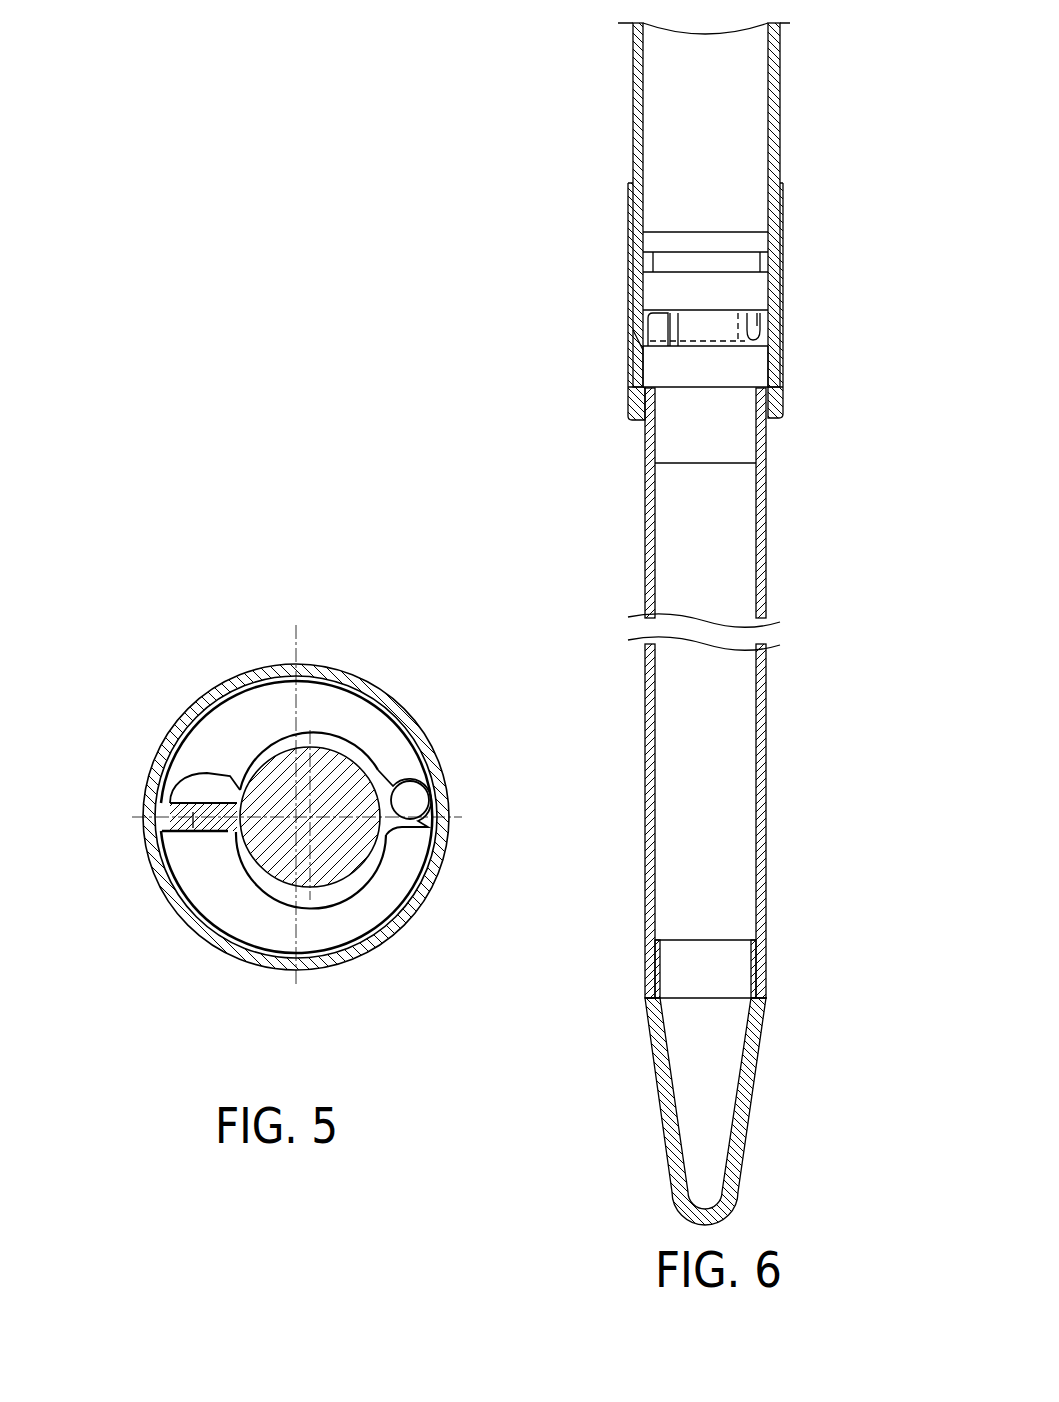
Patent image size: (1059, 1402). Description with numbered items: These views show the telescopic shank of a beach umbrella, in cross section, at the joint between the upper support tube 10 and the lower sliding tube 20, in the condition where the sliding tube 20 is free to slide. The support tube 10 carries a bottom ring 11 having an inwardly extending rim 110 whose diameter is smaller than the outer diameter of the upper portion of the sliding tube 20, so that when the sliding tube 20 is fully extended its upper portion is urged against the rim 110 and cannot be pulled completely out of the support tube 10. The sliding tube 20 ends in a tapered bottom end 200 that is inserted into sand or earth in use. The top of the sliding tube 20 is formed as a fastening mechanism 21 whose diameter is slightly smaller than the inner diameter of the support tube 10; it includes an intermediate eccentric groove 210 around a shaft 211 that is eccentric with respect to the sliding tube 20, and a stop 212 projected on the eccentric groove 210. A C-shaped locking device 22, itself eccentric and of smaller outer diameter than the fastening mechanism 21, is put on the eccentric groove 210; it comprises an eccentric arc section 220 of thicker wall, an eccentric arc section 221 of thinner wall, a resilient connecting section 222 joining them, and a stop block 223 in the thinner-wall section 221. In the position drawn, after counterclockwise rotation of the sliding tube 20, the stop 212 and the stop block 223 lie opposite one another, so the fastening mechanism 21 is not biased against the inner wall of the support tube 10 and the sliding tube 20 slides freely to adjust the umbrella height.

In FIG. 6, the support tube 10 is at (778, 100).
In FIG. 5, the support tube 10 is at (323, 670).
In FIG. 6, the bottom ring 11 is at (785, 230).
In FIG. 6, the inwardly extending rim 110 is at (633, 400).
In FIG. 6, the sliding tube 20 is at (768, 570).
In FIG. 6, the tapered bottom end 200 is at (758, 1073).
In FIG. 6, the fastening mechanism 21 is at (715, 370).
In FIG. 6, the eccentric groove 210 is at (640, 338).
In FIG. 6, the shaft 211 is at (743, 342).
In FIG. 5, the shaft 211 is at (312, 747).
In FIG. 6, the stop 212 is at (657, 327).
In FIG. 5, the stop 212 is at (192, 836).
In FIG. 6, the C-shaped locking device 22 is at (740, 287).
In FIG. 5, the eccentric arc section of thicker wall 220 is at (365, 905).
In FIG. 5, the eccentric arc section of thinner wall 221 is at (267, 710).
In FIG. 5, the resilient connecting section 222 is at (168, 802).
In FIG. 6, the stop block 223 is at (760, 320).
In FIG. 5, the stop block 223 is at (418, 798).